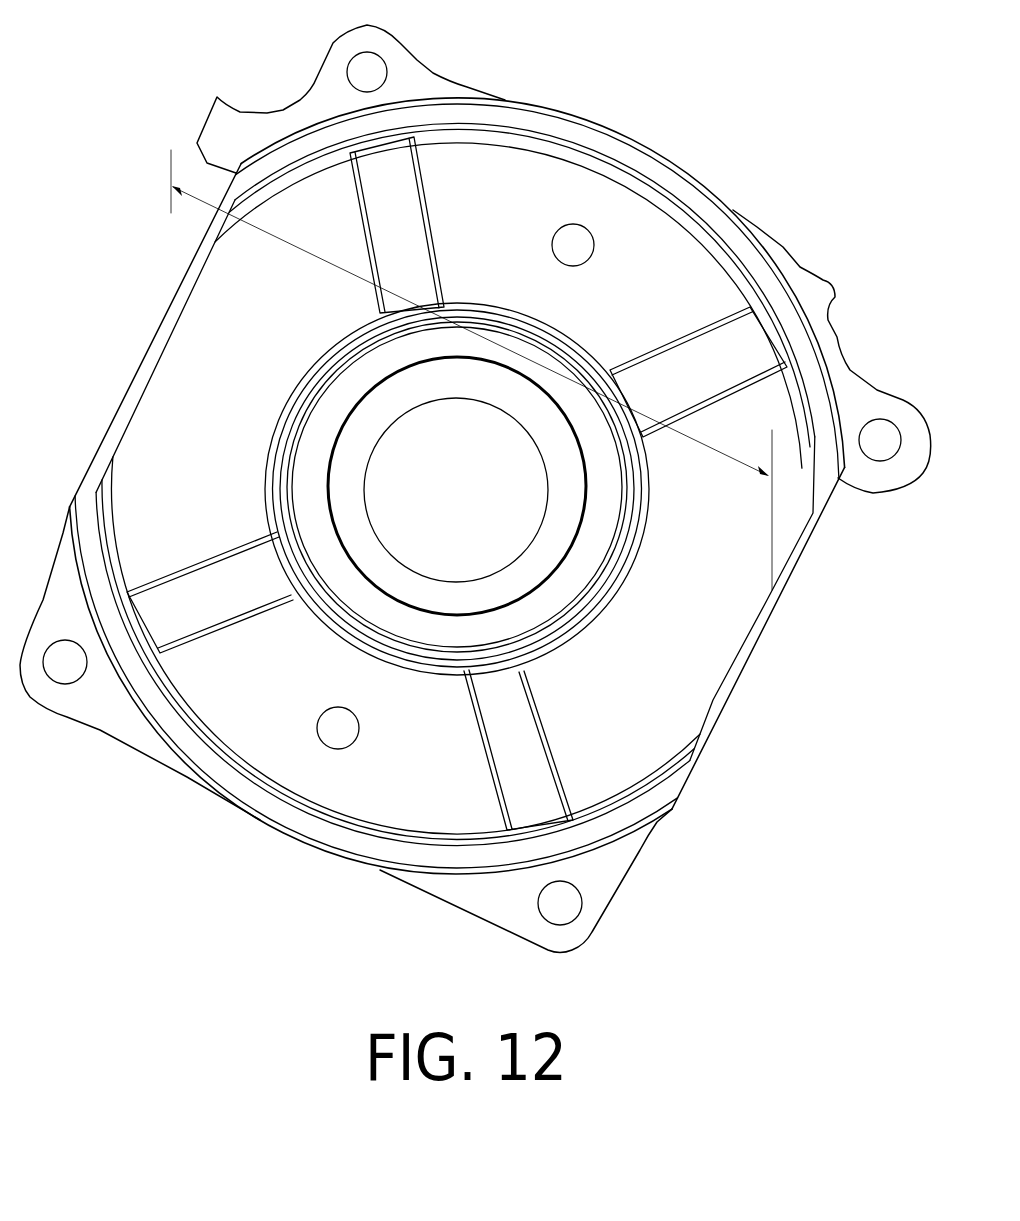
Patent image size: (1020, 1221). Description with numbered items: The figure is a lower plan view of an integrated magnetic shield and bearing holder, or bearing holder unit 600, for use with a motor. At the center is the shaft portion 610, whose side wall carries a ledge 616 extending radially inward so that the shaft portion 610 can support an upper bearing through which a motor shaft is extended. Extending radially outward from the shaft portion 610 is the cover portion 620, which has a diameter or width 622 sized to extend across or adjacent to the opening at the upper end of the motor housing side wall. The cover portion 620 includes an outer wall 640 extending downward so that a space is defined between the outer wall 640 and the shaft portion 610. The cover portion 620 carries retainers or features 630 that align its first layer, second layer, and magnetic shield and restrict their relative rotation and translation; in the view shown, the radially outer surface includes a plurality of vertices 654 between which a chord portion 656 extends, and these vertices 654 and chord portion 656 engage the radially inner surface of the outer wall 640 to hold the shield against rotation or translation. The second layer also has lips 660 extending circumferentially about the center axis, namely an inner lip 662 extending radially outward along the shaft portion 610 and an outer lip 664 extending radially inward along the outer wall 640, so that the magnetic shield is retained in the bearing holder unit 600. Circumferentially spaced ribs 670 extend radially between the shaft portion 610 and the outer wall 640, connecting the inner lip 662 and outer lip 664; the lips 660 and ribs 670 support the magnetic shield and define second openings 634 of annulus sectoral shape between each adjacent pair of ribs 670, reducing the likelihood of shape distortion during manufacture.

The bearing holder unit 600 is at (475, 491).
The shaft portion 610 is at (359, 380).
The ledge 616 is at (507, 410).
The cover portion 620 is at (427, 74).
The diameter or width 622 is at (548, 373).
The retainers or features 630 is at (821, 520).
The second openings 634 is at (252, 398).
The outer wall 640 is at (212, 794).
The vertices 654 is at (689, 760).
The chord portion 656 is at (165, 343).
The lips 660 is at (487, 293).
The inner lip 662 is at (463, 673).
The outer lip 664 is at (257, 770).
The ribs 670 is at (233, 557).